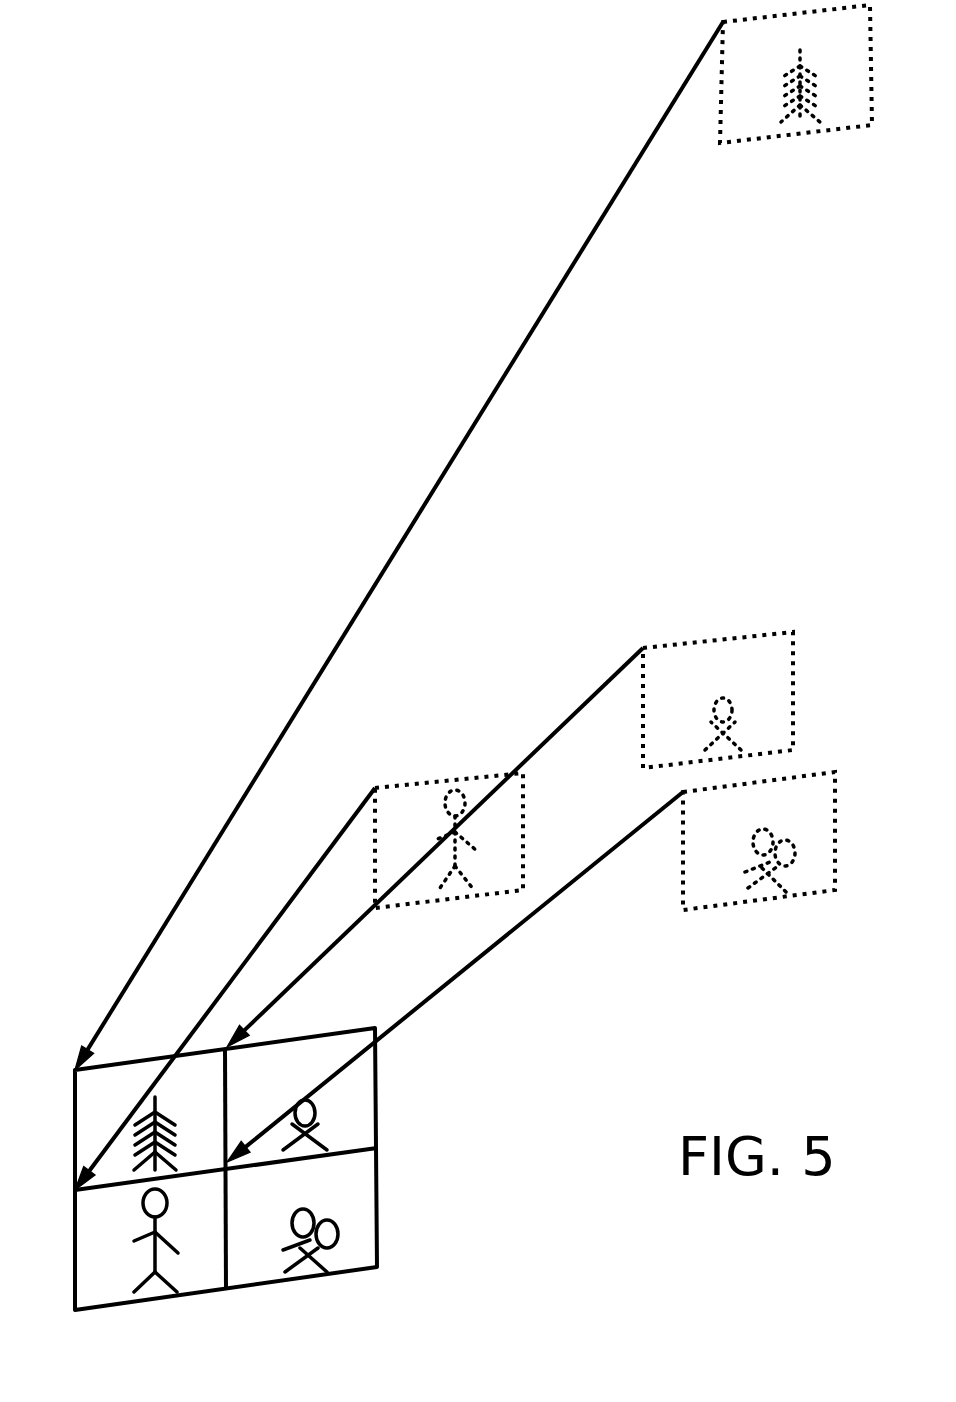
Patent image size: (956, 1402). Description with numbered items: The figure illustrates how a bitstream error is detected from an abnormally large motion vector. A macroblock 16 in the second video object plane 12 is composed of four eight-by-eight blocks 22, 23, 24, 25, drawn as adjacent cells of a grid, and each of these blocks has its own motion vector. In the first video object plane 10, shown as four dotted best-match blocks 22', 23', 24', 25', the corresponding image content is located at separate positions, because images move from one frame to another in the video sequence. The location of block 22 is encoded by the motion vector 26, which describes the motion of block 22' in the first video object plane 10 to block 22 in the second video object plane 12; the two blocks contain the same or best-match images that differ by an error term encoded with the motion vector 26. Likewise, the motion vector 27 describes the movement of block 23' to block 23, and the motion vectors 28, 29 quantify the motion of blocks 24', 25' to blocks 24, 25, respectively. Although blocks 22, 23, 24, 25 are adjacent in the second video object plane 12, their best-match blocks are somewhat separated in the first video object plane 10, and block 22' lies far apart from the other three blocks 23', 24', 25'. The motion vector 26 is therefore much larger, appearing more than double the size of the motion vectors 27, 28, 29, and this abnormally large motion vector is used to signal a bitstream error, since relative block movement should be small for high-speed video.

The first video object plane 10 is at (612, 796).
The second video object plane 12 is at (474, 1111).
The macroblock 16 is at (377, 1148).
The block 22 is at (135, 1127).
The block 23 is at (287, 1108).
The block 24 is at (136, 1240).
The block 25 is at (292, 1230).
The best-match block 22' is at (796, 74).
The best-match block 23' is at (718, 700).
The best-match block 24' is at (449, 840).
The best-match block 25' is at (759, 841).
The motion vector 26 is at (235, 810).
The motion vector 27 is at (356, 930).
The motion vector 28 is at (277, 920).
The motion vector 29 is at (452, 979).